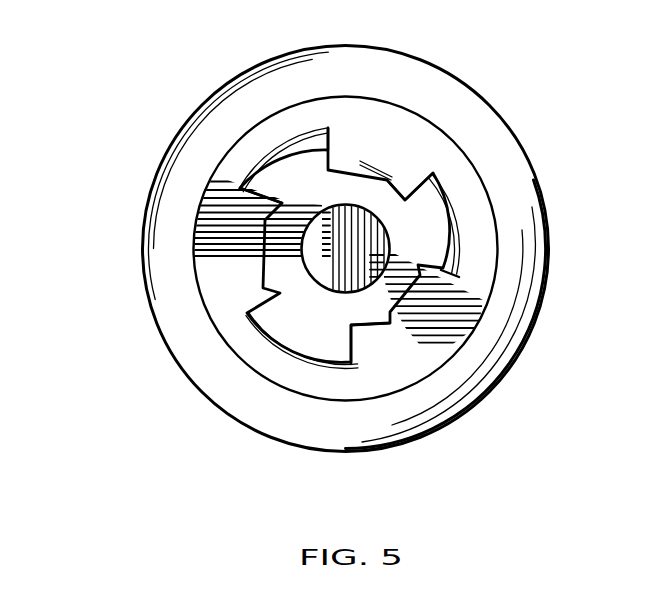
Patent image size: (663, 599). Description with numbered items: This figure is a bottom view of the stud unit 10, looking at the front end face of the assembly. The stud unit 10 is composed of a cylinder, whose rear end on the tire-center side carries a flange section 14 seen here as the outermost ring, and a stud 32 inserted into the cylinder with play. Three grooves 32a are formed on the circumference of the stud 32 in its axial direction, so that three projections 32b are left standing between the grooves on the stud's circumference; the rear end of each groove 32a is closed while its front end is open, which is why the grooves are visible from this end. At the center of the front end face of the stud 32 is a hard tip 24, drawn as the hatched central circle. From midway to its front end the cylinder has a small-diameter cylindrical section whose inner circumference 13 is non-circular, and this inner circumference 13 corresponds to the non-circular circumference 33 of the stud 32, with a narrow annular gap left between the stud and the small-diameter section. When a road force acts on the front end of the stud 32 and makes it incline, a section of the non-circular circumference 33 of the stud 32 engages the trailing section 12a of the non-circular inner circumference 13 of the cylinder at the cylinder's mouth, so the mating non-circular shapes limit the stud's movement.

The stud unit 10 is at (121, 86).
The trailing section 12a is at (247, 243).
The inner circumference 13 is at (343, 401).
The flange section 14 is at (547, 211).
The hard tip 24 is at (310, 263).
The stud 32 is at (283, 172).
The grooves 32a is at (363, 157).
The projections 32b is at (290, 135).
The non-circular circumference 33 is at (381, 184).